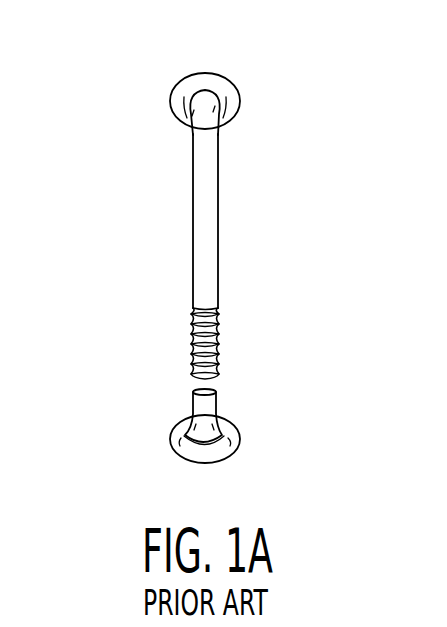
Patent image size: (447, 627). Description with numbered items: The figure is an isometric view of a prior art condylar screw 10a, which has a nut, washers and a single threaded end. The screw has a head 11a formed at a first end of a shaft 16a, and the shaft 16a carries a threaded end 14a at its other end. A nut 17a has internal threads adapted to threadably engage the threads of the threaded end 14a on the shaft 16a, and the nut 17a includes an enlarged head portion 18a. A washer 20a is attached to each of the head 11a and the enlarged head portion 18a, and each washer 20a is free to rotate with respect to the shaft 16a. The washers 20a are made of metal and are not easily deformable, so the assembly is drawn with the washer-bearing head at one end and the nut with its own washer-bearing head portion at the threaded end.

The prior art condylar screw 10a is at (240, 173).
The head 11a is at (209, 106).
The threaded end 14a is at (218, 320).
The shaft 16a is at (218, 227).
The nut 17a is at (218, 402).
The enlarged head portion 18a is at (172, 448).
The washer 20a is at (205, 87).